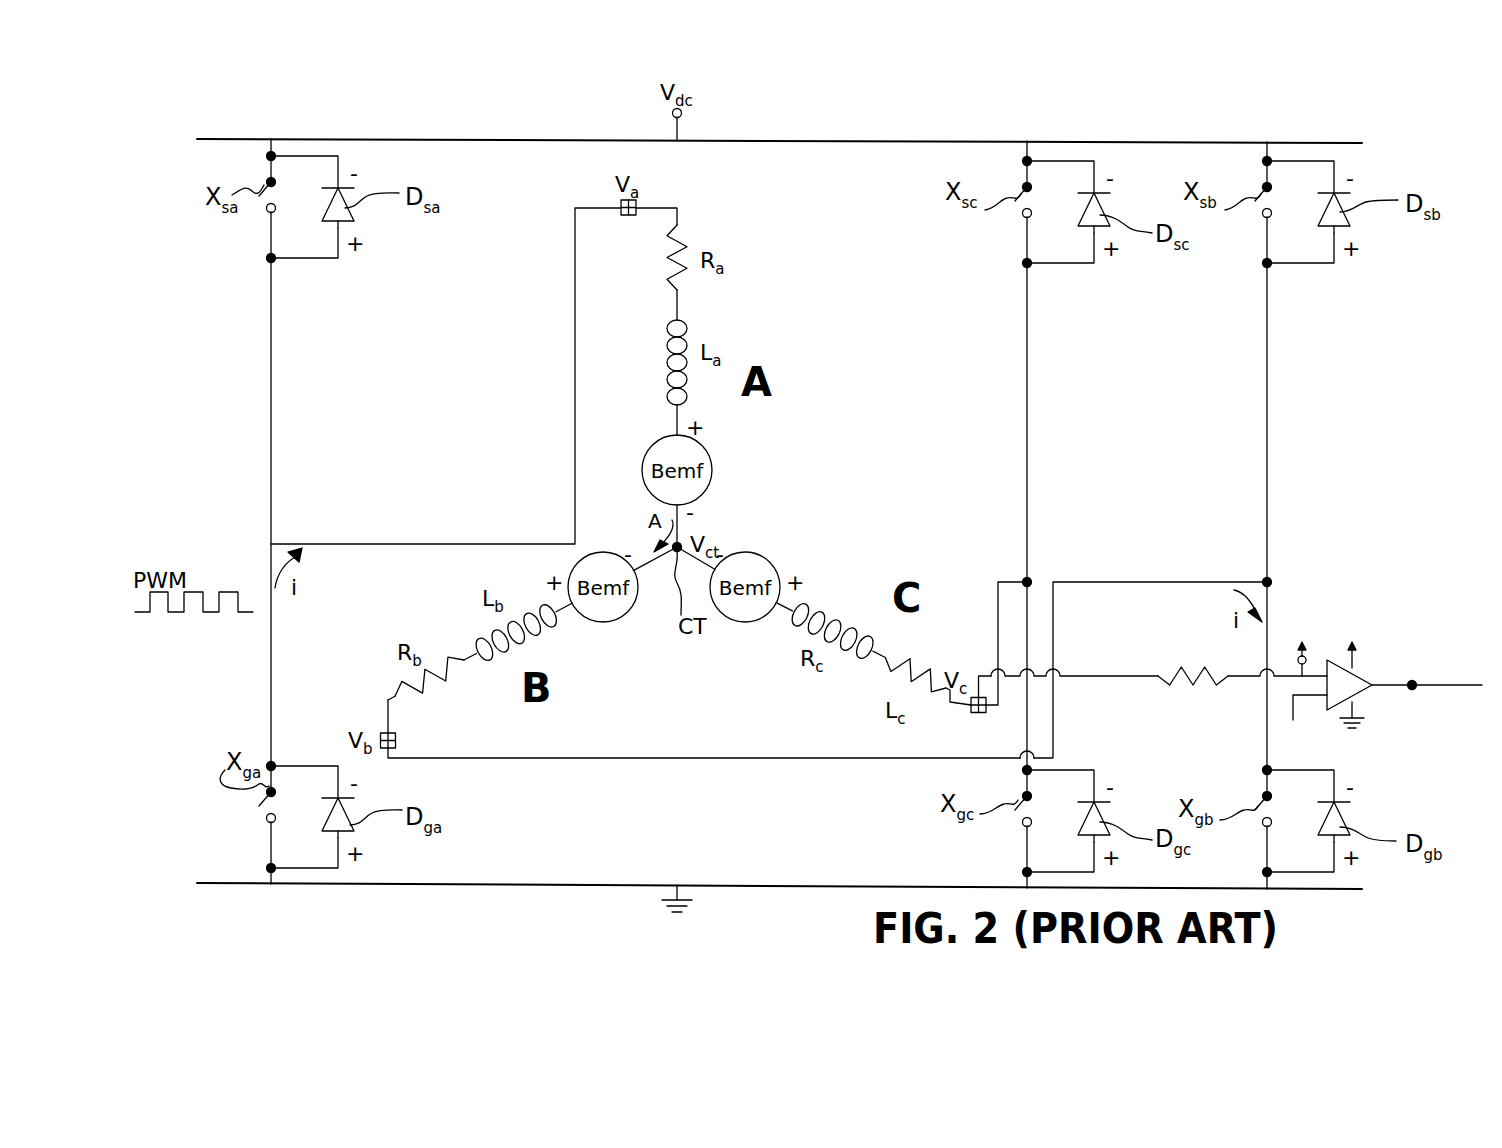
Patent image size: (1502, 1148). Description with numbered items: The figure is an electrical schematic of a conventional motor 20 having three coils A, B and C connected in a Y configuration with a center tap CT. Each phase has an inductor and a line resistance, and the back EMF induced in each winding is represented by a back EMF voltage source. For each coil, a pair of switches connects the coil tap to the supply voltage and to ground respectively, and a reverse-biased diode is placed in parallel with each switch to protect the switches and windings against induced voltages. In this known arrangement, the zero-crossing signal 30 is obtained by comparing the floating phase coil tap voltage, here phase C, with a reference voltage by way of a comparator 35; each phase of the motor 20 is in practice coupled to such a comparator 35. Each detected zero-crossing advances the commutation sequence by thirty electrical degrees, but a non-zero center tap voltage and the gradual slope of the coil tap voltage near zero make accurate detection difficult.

The motor 20 is at (998, 118).
The comparator 35 is at (1362, 668).
The zero-crossing signal 30 is at (1412, 689).